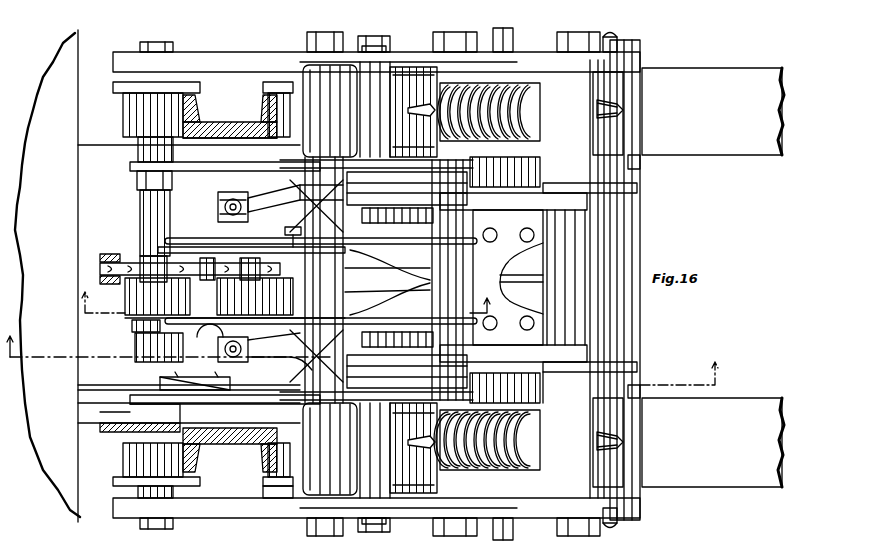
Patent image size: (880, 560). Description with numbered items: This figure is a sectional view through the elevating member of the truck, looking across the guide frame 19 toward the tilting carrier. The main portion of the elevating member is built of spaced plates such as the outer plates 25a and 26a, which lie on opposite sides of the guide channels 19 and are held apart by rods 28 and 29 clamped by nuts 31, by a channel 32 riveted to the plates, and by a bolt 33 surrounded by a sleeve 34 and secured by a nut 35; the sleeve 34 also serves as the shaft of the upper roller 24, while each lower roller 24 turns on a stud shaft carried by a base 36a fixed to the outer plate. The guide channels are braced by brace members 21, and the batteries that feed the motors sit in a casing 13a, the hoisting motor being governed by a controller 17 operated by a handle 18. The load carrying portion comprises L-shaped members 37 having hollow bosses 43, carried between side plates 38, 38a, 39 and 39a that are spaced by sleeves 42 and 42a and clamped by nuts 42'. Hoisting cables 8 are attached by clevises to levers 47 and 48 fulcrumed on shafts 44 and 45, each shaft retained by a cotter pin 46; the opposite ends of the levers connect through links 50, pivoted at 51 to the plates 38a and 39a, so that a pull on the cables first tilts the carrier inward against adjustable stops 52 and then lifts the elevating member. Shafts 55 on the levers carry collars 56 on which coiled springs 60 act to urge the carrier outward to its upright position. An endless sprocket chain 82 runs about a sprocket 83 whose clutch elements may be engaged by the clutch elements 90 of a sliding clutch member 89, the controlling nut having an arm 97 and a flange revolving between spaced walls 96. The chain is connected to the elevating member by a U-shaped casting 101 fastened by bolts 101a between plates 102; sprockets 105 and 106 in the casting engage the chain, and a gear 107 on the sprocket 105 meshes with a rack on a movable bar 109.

The hoisting cables 8 is at (218, 204).
The battery casing 13a is at (70, 522).
The controller 17 is at (359, 351).
The handle 18 is at (612, 35).
The guide frame 19 is at (205, 124).
The brace member 21 is at (288, 295).
The roller 24 is at (123, 108).
The outer plate 25a is at (212, 52).
The outer plate 26a is at (242, 518).
The rod 28 is at (328, 28).
The rod 29 is at (454, 32).
The nut 31 is at (348, 48).
The channel 32 is at (300, 56).
The bolt 33 is at (142, 44).
The sleeve 34 is at (138, 160).
The nut 35 is at (137, 182).
The base 36a is at (240, 486).
The L-shaped member 37 is at (716, 152).
The side plate 38 is at (641, 58).
The side plate 38a is at (640, 190).
The side plate 39 is at (641, 494).
The side plate 39a is at (640, 366).
The sleeve 42 is at (616, 306).
The nut 42' is at (634, 43).
The sleeve 42a is at (640, 168).
The hollow boss 43 is at (610, 90).
The shaft 44 is at (386, 46).
The shaft 45 is at (386, 532).
The cotter pin 46 is at (372, 36).
The lever 47 is at (305, 182).
The lever 48 is at (300, 362).
The link 50 is at (509, 280).
The pivot connection 51 is at (558, 380).
The adjustable stop 52 is at (514, 40).
The shaft 55 is at (414, 67).
The collar 56 is at (444, 134).
The coiled spring 60 is at (490, 418).
The sprocket chain 82 is at (98, 258).
The sprocket 83 is at (128, 262).
The clutch member 89 is at (135, 344).
The clutch elements 90 is at (132, 326).
The spaced walls 96 is at (98, 412).
The arm 97 is at (238, 362).
The U-shaped casting 101 is at (330, 262).
The bolt 101a is at (285, 231).
The plate 102 is at (372, 248).
The sprocket 105 is at (315, 288).
The sprocket 106 is at (150, 240).
The gear 107 is at (190, 295).
The movable bar 109 is at (330, 296).